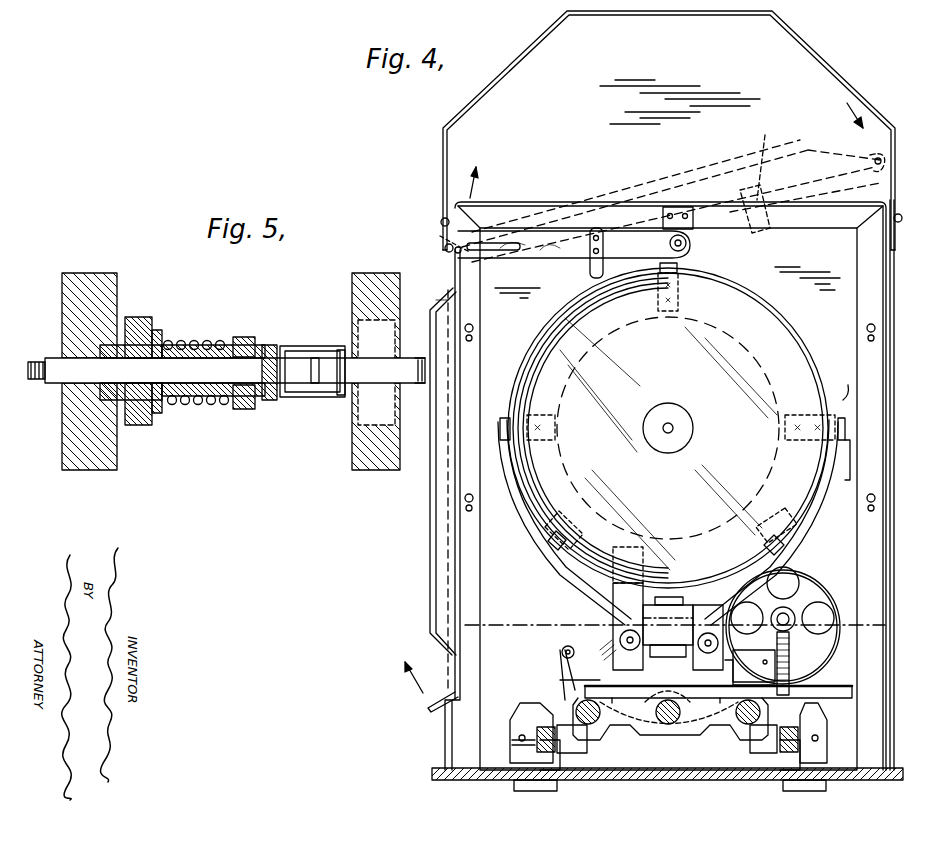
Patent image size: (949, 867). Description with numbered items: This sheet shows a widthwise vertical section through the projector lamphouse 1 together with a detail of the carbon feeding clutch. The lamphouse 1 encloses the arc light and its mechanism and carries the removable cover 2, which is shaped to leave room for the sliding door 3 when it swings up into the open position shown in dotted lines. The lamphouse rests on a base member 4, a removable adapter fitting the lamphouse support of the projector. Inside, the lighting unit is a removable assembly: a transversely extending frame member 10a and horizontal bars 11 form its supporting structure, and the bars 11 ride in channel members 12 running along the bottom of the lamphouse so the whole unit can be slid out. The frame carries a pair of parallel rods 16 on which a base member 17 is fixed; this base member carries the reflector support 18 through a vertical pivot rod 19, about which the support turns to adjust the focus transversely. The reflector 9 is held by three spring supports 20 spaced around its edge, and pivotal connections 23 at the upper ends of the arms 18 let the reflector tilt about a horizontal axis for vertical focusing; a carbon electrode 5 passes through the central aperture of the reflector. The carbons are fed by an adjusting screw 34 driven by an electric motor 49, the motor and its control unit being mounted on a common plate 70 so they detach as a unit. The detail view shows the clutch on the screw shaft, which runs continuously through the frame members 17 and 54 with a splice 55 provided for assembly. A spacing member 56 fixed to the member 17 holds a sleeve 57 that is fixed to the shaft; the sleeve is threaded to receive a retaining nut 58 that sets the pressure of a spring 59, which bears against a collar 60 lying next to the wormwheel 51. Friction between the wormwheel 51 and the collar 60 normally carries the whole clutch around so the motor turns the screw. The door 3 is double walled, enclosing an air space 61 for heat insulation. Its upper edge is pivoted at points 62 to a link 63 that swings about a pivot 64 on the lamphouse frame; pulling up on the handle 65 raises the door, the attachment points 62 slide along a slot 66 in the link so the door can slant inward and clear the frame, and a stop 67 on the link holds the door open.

In FIG. 4, the lamphouse 1 is at (895, 560).
In FIG. 4, the removable cover 2 is at (850, 78).
In FIG. 4, the sliding door 3 is at (432, 596).
In FIG. 4, the base member 4 is at (905, 776).
In FIG. 4, the carbon electrode 5 is at (672, 426).
In FIG. 4, the reflector 9 is at (795, 345).
In FIG. 4, the frame member 10a is at (640, 722).
In FIG. 4, the horizontally extending bars 11 is at (667, 739).
In FIG. 4, the channel members 12 is at (540, 680).
In FIG. 4, the rods 16 is at (600, 724).
In FIG. 5, the base member 17 is at (375, 468).
In FIG. 4, the reflector support 18 is at (545, 560).
In FIG. 4, the vertical pivot rod 19 is at (668, 596).
In FIG. 4, the spring supports 20 is at (655, 270).
In FIG. 4, the pivotal connections 23 is at (525, 410).
In FIG. 5, the adjusting screw 34 is at (190, 385).
In FIG. 4, the electric motor 49 is at (830, 610).
In FIG. 5, the wormwheel 51 is at (143, 315).
In FIG. 5, the frame member 54 is at (98, 468).
In FIG. 5, the splicing 55 is at (316, 383).
In FIG. 5, the spacing member 56 is at (268, 402).
In FIG. 5, the sleeve 57 is at (218, 398).
In FIG. 5, the retaining nut 58 is at (250, 338).
In FIG. 5, the spring 59 is at (205, 340).
In FIG. 5, the collar 60 is at (160, 330).
In FIG. 4, the air space 61 is at (440, 548).
In FIG. 4, the pivot 62 is at (445, 245).
In FIG. 4, the link 63 is at (540, 252).
In FIG. 4, the pivot 64 is at (686, 248).
In FIG. 4, the handle 65 is at (430, 705).
In FIG. 4, the slot 66 is at (492, 250).
In FIG. 4, the stop 67 is at (590, 270).
In FIG. 4, the common plate 70 is at (852, 692).